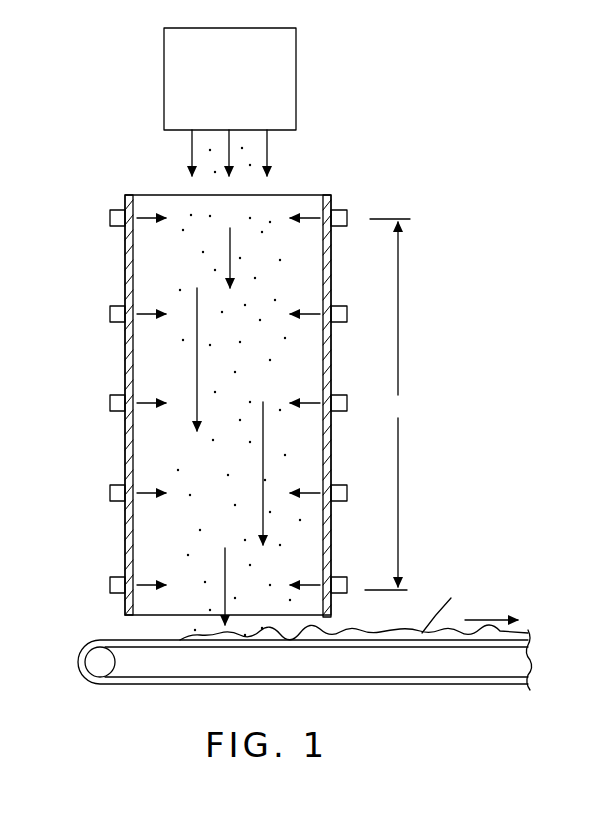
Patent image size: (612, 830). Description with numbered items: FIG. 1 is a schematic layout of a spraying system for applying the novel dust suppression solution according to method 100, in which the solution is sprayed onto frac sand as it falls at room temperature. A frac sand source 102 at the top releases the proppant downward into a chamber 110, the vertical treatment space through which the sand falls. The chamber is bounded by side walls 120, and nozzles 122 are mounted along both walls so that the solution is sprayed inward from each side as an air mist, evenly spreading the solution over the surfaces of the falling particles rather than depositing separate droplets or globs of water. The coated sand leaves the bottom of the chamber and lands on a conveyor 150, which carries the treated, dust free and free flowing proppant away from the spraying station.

The spraying method 100 is at (94, 92).
The frac sand source 102 is at (296, 80).
The hopper / treatment chamber 110 is at (203, 391).
The chamber wall 120 is at (147, 530).
The spray nozzles 122 is at (113, 309).
The conveyor belt 150 is at (130, 640).